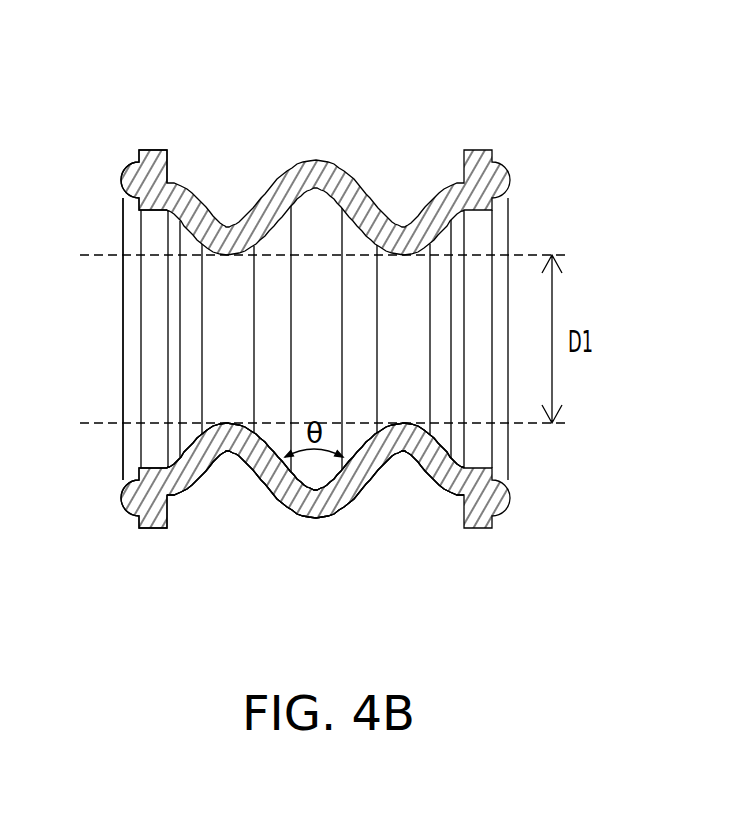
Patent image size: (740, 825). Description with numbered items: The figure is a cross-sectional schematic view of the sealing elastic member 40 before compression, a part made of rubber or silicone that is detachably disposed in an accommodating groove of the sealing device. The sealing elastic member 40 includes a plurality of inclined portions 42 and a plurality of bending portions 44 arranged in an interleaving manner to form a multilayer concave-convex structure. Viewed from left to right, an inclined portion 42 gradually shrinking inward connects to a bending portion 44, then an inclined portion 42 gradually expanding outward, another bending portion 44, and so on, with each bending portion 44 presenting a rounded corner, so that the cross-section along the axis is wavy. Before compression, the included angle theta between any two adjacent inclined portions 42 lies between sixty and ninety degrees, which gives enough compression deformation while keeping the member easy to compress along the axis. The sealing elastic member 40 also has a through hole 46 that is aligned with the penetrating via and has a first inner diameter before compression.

The sealing elastic member 40 is at (432, 90).
The inclined portion 42 is at (185, 478).
The bending portion 44 is at (227, 437).
The through hole 46 is at (85, 347).